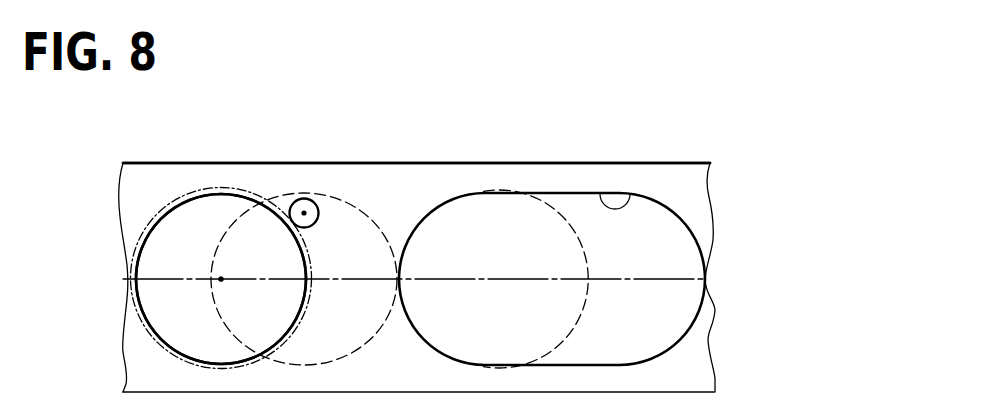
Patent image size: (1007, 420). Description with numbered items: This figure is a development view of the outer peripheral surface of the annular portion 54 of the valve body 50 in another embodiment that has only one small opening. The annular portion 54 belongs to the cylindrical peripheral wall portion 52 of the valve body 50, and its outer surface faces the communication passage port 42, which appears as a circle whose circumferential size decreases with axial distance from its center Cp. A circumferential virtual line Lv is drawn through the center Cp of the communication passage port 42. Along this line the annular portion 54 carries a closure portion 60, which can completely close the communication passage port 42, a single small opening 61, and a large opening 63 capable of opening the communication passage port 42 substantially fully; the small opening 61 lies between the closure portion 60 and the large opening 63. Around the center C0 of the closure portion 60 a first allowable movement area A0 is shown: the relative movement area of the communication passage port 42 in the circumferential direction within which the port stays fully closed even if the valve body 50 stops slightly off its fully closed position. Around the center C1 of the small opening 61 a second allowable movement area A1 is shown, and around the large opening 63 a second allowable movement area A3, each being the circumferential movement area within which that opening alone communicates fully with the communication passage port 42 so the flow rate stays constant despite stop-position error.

The valve body 50 is at (157, 163).
The peripheral wall portion 52 is at (427, 162).
The annular portion 54 is at (692, 188).
The communication passage port 42 is at (139, 246).
The closure portion 60 is at (165, 268).
The small opening 61 is at (311, 199).
The large opening 63 is at (630, 194).
The first allowable movement area A0 is at (150, 210).
The second allowable movement area A1 is at (273, 193).
The second allowable movement area A3 is at (569, 200).
The center of the closure portion C0 is at (221, 279).
The center of the communication passage port Cp is at (214, 199).
The center of the small opening C1 is at (304, 212).
The circumferential virtual line Lv is at (665, 279).